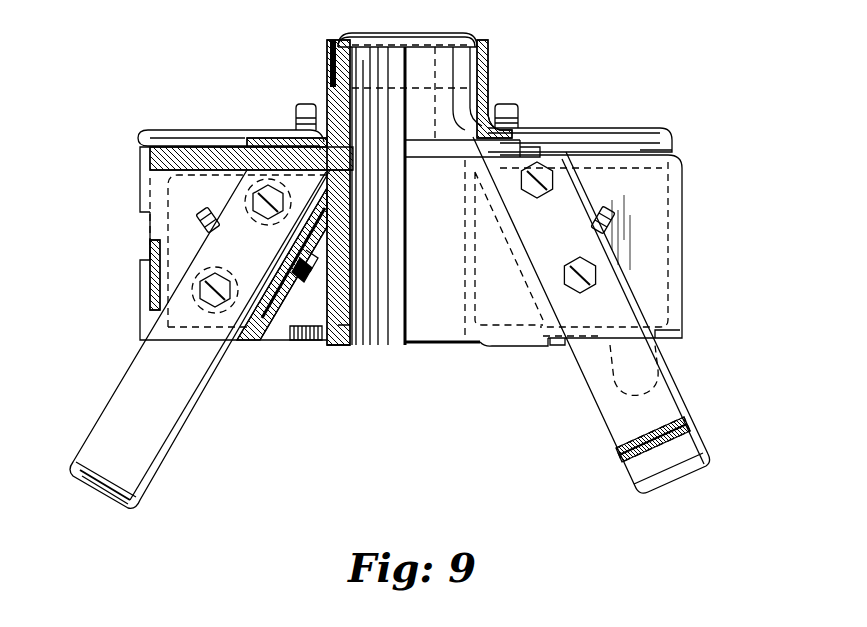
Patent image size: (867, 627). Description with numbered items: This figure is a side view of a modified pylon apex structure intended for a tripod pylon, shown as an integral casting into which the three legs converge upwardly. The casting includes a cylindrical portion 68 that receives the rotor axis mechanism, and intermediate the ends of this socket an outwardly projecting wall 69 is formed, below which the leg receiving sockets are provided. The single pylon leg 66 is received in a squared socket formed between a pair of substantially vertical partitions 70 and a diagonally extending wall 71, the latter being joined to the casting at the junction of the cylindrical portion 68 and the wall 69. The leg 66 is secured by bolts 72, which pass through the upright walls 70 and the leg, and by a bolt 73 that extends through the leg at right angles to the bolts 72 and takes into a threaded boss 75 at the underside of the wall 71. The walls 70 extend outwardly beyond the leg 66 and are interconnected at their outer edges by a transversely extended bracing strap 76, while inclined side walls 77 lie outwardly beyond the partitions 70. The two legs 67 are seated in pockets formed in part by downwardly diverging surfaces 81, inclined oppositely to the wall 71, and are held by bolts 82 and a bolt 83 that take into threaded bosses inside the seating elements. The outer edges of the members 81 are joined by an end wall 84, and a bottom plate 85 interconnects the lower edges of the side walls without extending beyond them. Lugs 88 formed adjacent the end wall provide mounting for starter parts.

The pylon leg 66 is at (155, 430).
The pylon legs 67 is at (625, 428).
The cylindrical portion 68 is at (347, 308).
The outwardly projecting wall 69 is at (260, 145).
The vertically extended partitions 70 is at (180, 254).
The diagonally extending wall 71 is at (300, 272).
The bolts 72 is at (220, 290).
The bolt 73 is at (205, 220).
The threaded boss 75 is at (305, 268).
The bracing strap 76 is at (152, 285).
The inclined side walls 77 is at (452, 318).
The downwardly diverging surfaces 81 is at (656, 312).
The bolts 82 is at (540, 180).
The bolt 83 is at (612, 222).
The end wall 84 is at (682, 249).
The bottom plate 85 is at (527, 337).
The lugs 88 is at (140, 178).